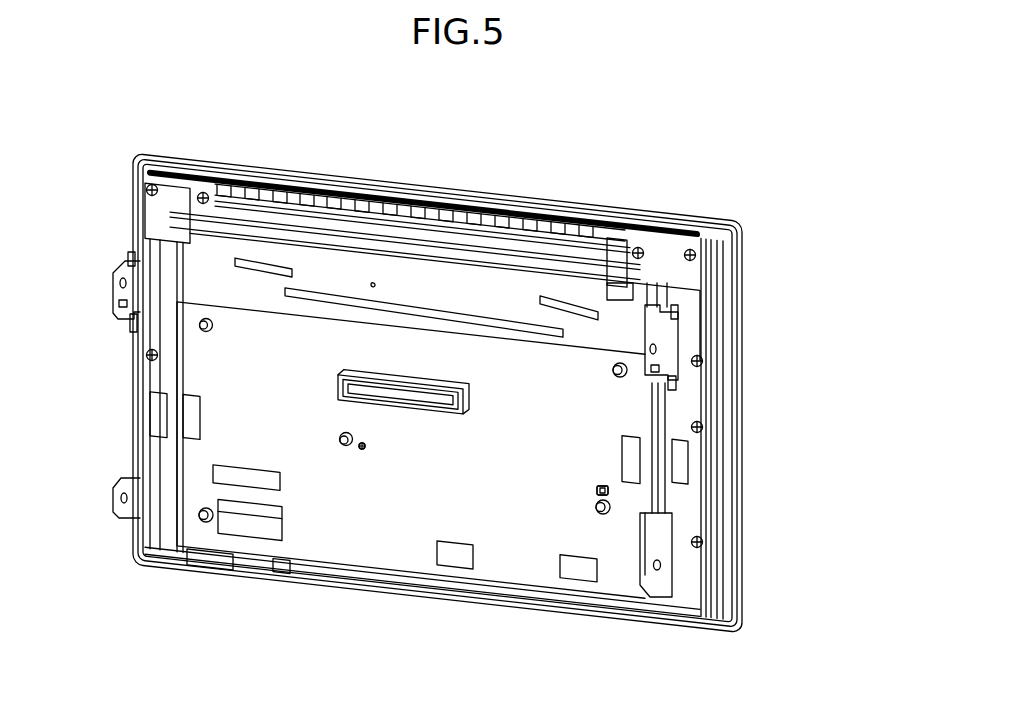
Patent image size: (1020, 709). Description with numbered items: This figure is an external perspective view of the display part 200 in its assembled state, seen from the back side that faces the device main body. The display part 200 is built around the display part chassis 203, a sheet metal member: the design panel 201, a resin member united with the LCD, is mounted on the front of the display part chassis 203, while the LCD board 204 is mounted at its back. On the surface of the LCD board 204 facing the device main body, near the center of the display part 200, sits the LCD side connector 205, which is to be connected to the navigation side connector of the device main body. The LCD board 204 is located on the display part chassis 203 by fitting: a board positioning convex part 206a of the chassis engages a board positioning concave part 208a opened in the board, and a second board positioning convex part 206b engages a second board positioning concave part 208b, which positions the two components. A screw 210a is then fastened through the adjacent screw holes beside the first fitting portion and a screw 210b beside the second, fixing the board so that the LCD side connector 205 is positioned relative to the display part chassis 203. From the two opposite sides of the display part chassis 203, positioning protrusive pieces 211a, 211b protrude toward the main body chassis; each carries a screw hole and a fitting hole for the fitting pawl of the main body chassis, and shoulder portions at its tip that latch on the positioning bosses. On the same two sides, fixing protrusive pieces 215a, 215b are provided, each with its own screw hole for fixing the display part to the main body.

The display part 200 is at (622, 100).
The design panel 201 is at (437, 186).
The display part chassis 203 is at (478, 296).
The LCD board 204 is at (530, 582).
The LCD side connector 205 is at (418, 412).
The board positioning convex part 206a is at (361, 449).
The board positioning concave part 208a is at (361, 449).
The board positioning convex part 206b is at (609, 491).
The board positioning concave part 208b is at (609, 491).
The screw 210a is at (347, 447).
The screw 210b is at (609, 506).
The positioning protrusive piece 211a is at (672, 373).
The positioning protrusive piece 211b is at (133, 322).
The fixing protrusive piece 215a is at (668, 528).
The fixing protrusive piece 215b is at (127, 478).